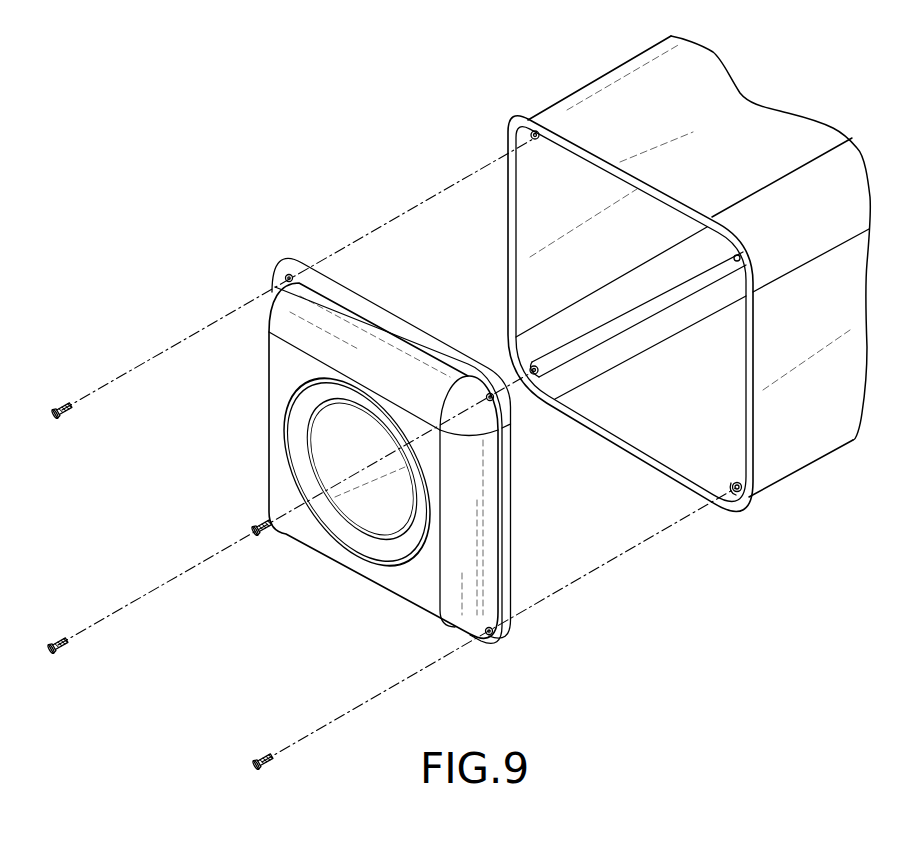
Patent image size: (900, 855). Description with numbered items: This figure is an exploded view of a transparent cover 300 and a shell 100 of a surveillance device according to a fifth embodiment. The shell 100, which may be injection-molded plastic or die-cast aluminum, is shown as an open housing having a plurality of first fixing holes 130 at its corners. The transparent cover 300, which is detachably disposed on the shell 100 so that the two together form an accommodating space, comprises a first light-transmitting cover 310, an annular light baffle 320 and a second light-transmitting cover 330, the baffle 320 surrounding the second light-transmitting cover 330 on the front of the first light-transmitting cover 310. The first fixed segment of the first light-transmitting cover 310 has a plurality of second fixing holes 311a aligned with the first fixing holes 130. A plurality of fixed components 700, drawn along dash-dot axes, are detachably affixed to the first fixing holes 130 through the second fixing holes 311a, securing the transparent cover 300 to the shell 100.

The shell 100 is at (527, 109).
The first fixing holes 130 is at (735, 496).
The transparent cover 300 is at (355, 457).
The first light-transmitting cover 310 is at (268, 387).
The second fixing holes 311a is at (489, 640).
The annular light baffle 320 is at (319, 541).
The second light-transmitting cover 330 is at (322, 476).
The fixed components 700 is at (266, 767).